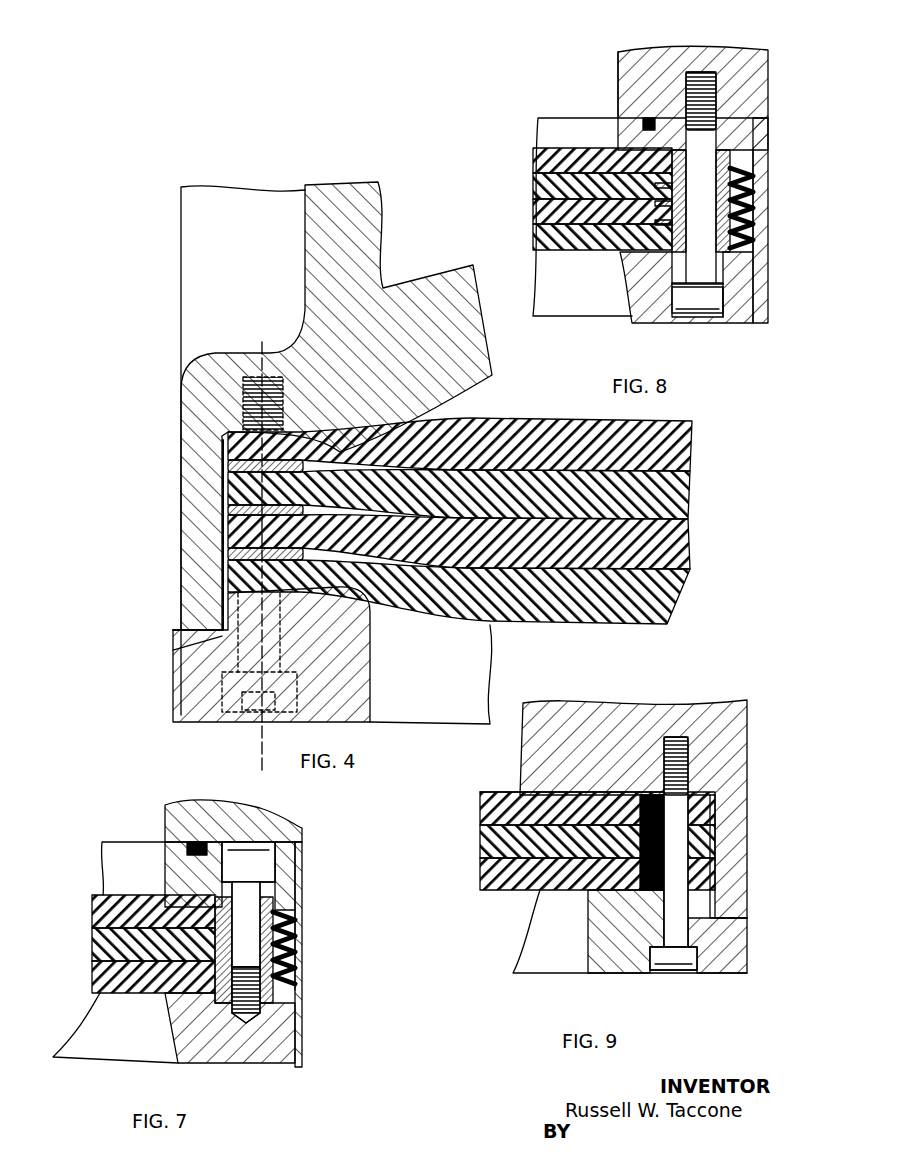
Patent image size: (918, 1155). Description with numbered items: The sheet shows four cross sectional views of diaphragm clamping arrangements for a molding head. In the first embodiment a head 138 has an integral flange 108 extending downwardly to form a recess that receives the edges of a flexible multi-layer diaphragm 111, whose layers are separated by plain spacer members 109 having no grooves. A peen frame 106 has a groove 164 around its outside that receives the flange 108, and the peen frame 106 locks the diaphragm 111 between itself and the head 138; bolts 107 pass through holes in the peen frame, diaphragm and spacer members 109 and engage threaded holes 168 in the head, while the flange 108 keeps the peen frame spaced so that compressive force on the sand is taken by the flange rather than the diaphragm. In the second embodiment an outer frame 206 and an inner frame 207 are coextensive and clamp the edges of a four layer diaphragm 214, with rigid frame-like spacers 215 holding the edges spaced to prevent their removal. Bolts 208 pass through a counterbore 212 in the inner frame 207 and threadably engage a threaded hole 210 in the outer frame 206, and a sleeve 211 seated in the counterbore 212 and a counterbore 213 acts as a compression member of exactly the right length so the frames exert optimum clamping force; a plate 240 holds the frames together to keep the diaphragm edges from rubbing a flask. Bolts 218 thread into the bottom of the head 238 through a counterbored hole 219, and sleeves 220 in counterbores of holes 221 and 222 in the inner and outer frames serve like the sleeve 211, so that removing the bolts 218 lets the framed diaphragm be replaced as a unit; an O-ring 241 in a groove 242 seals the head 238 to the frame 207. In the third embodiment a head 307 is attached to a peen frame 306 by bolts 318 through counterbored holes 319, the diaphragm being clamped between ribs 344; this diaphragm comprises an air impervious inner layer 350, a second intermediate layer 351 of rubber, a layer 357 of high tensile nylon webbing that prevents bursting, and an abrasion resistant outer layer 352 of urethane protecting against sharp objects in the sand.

In FIG. 4, the peen frame 106 is at (353, 629).
In FIG. 4, the bolts 107 is at (195, 650).
In FIG. 4, the integral flange 108 is at (180, 488).
In FIG. 4, the spacer members 109 is at (228, 465).
In FIG. 4, the flexible multi-layer diaphragm 111 is at (517, 420).
In FIG. 4, the head 138 is at (190, 328).
In FIG. 4, the groove 164 is at (176, 634).
In FIG. 4, the threaded holes 168 is at (280, 384).
In FIG. 8, the outer frame 206 is at (747, 275).
In FIG. 7, the outer frame 206 is at (283, 1048).
In FIG. 8, the inner frame 207 is at (617, 118).
In FIG. 7, the inner frame 207 is at (163, 867).
In FIG. 7, the bolts 208 is at (258, 1028).
In FIG. 7, the threaded hole 210 is at (258, 990).
In FIG. 7, the sleeve 211 is at (272, 903).
In FIG. 9, the sleeve 211 is at (738, 873).
In FIG. 7, the counterbore 212 is at (300, 858).
In FIG. 7, the counterbore 213 is at (277, 897).
In FIG. 8, the diaphragm 214 is at (535, 160).
In FIG. 7, the diaphragm 214 is at (97, 950).
In FIG. 8, the spacers 215 is at (580, 252).
In FIG. 7, the spacers 215 is at (293, 930).
In FIG. 8, the bolts 218 is at (677, 313).
In FIG. 8, the counterbored hole 219 is at (727, 307).
In FIG. 8, the sleeves 220 is at (753, 223).
In FIG. 8, the hole 221 is at (735, 252).
In FIG. 8, the hole 222 is at (720, 140).
In FIG. 8, the head 238 is at (768, 60).
In FIG. 8, the plate 240 is at (767, 192).
In FIG. 7, the plate 240 is at (297, 975).
In FIG. 8, the O-ring 241 is at (648, 118).
In FIG. 8, the groove 242 is at (637, 116).
In FIG. 9, the peen frame 306 is at (620, 965).
In FIG. 9, the head 307 is at (740, 778).
In FIG. 9, the bolts 318 is at (678, 928).
In FIG. 9, the counterbored holes 319 is at (700, 960).
In FIG. 9, the rib 344 is at (608, 803).
In FIG. 9, the inner layer 350 is at (497, 790).
In FIG. 9, the second intermediate layer 351 is at (483, 812).
In FIG. 9, the outer layer 352 is at (483, 872).
In FIG. 9, the high tensile strength layer 357 is at (483, 846).